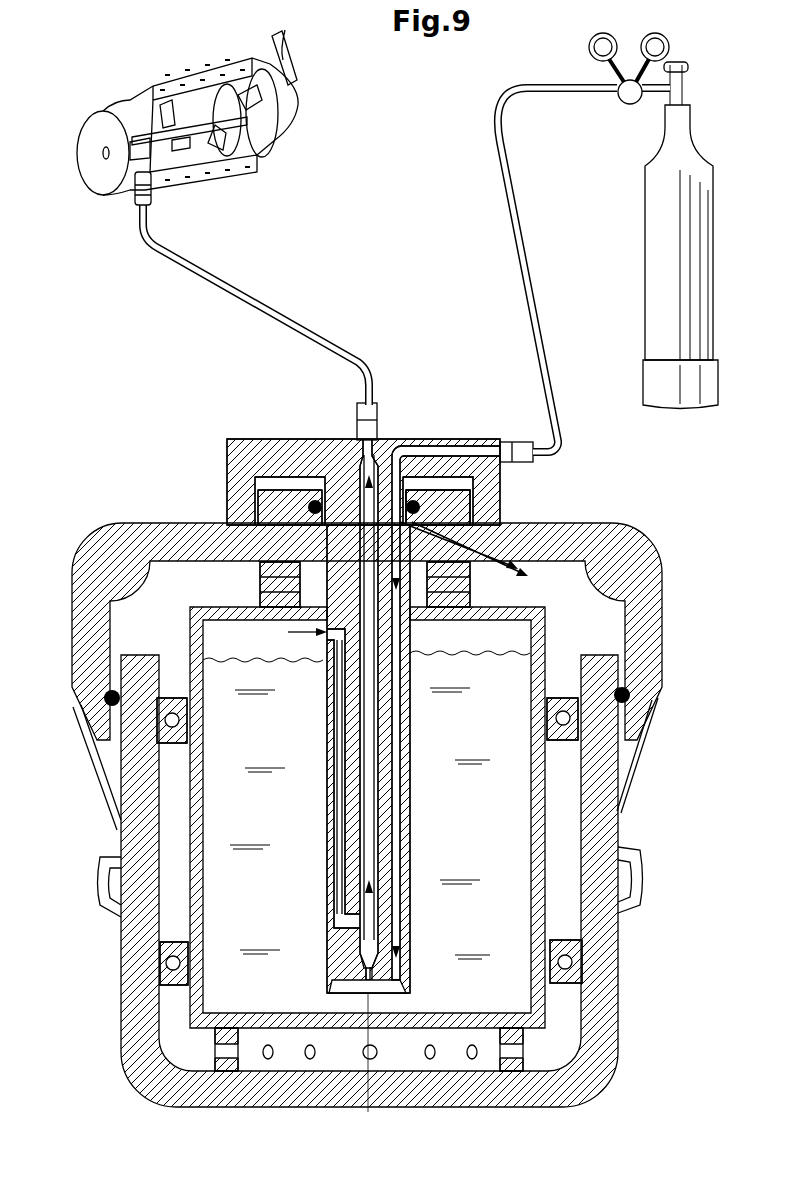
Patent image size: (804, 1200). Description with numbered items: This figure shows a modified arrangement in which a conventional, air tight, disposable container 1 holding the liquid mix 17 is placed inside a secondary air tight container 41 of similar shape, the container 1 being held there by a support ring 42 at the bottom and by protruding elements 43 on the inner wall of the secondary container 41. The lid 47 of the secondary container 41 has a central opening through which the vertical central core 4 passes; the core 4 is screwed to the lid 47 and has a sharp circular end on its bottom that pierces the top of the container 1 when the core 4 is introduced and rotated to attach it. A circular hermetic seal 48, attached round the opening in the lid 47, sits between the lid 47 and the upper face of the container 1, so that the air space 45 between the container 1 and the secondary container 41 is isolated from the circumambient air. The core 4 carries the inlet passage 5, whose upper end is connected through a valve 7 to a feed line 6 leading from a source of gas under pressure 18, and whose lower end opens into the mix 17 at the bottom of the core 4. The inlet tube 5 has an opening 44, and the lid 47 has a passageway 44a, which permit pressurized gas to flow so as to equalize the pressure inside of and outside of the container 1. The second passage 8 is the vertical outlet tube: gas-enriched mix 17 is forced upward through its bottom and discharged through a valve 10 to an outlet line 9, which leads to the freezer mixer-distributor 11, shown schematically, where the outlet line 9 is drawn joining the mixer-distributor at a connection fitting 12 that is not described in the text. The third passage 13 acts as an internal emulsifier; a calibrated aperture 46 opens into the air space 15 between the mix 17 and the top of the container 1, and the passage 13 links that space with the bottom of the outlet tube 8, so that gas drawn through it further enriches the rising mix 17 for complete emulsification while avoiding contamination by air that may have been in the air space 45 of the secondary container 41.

The container 1 is at (198, 848).
The central core 4 is at (335, 910).
The inlet passage 5 is at (398, 750).
The feed line 6 is at (515, 222).
The valve 7 is at (522, 442).
The second passage 8 is at (372, 700).
The outlet line 9 is at (218, 282).
The valve 10 is at (357, 408).
The freezer mixer-distributor 11 is at (123, 117).
The outlet nozzle 12 is at (137, 200).
The third passage 13 is at (343, 845).
The air space 15 is at (494, 648).
The mix 17 is at (489, 908).
The source of gas under pressure 18 is at (652, 257).
The secondary container 41 is at (137, 940).
The support ring 42 is at (215, 1052).
The protruding elements 43 is at (170, 742).
The opening 44 is at (420, 514).
The passageway 44a is at (513, 527).
The air space 45 is at (155, 613).
The calibrated aperture 46 is at (328, 638).
The lid 47 is at (170, 528).
The circular hermetic seal 48 is at (258, 582).